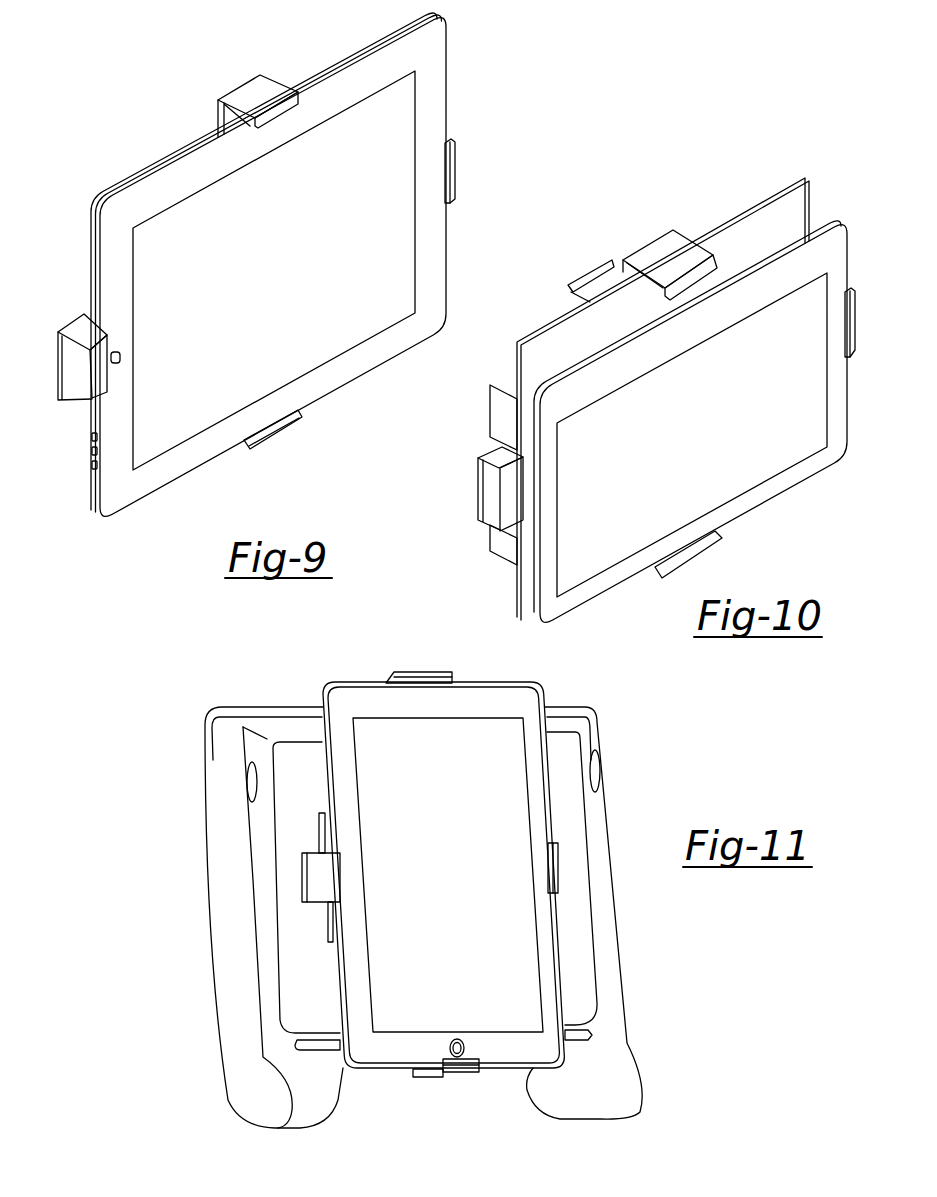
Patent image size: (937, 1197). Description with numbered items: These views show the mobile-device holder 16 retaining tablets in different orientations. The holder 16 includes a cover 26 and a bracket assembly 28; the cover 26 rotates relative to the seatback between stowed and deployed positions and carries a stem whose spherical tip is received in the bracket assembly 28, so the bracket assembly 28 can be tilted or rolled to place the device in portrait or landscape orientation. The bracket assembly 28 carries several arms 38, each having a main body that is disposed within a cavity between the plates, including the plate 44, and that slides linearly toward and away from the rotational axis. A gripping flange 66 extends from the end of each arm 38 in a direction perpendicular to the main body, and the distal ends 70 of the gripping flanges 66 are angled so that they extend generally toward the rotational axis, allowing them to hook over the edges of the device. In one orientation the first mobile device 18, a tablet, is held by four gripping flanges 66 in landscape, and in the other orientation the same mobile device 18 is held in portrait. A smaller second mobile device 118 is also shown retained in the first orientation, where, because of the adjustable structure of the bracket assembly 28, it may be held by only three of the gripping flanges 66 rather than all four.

In FIG. 11, the mobile-device holder 16 is at (217, 1001).
In FIG. 9, the mobile device 18 is at (429, 63).
In FIG. 11, the mobile device 18 is at (527, 708).
In FIG. 11, the cover 26 is at (583, 733).
In FIG. 10, the bracket assembly 28 is at (644, 382).
In FIG. 11, the bracket assembly 28 is at (319, 829).
In FIG. 9, the arm 38 is at (217, 95).
In FIG. 10, the arm 38 is at (642, 247).
In FIG. 11, the arm 38 is at (396, 671).
In FIG. 10, the plate 44 is at (779, 186).
In FIG. 9, the gripping flange 66 is at (263, 84).
In FIG. 10, the gripping flange 66 is at (682, 252).
In FIG. 11, the gripping flange 66 is at (442, 679).
In FIG. 9, the distal end 70 is at (271, 125).
In FIG. 10, the mobile device 118 is at (838, 265).